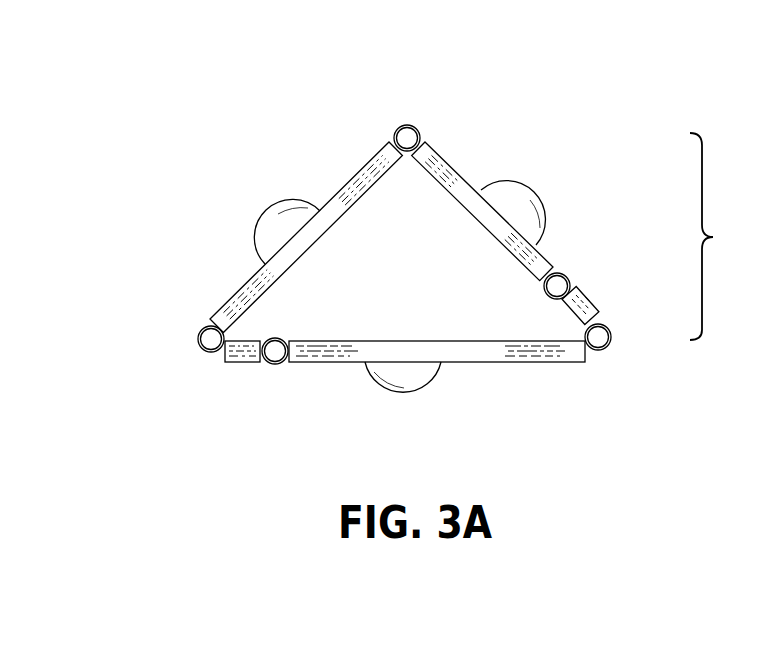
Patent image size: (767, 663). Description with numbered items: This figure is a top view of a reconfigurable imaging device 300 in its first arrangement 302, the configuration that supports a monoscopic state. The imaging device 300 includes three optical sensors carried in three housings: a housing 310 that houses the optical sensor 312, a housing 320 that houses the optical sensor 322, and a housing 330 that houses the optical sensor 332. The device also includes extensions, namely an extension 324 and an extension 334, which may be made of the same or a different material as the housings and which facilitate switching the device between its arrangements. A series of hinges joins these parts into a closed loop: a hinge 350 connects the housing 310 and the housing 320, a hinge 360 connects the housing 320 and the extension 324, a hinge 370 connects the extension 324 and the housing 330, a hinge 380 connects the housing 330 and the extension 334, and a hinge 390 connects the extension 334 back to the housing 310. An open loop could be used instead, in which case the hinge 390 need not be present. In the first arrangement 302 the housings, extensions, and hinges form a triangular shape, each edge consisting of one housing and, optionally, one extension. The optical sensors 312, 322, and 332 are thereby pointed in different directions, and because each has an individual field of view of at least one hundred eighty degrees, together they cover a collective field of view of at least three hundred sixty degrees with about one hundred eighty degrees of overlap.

The imaging device 300 is at (566, 112).
The first arrangement 302 is at (582, 229).
The housing 310 is at (245, 286).
The optical sensor 312 is at (277, 226).
The housing 320 is at (453, 167).
The optical sensor 322 is at (512, 198).
The extension 324 is at (588, 300).
The housing 330 is at (475, 353).
The optical sensor 332 is at (395, 380).
The extension 334 is at (238, 357).
The hinge 350 is at (407, 133).
The hinge 360 is at (558, 283).
The hinge 370 is at (600, 336).
The hinge 380 is at (274, 355).
The hinge 390 is at (209, 341).